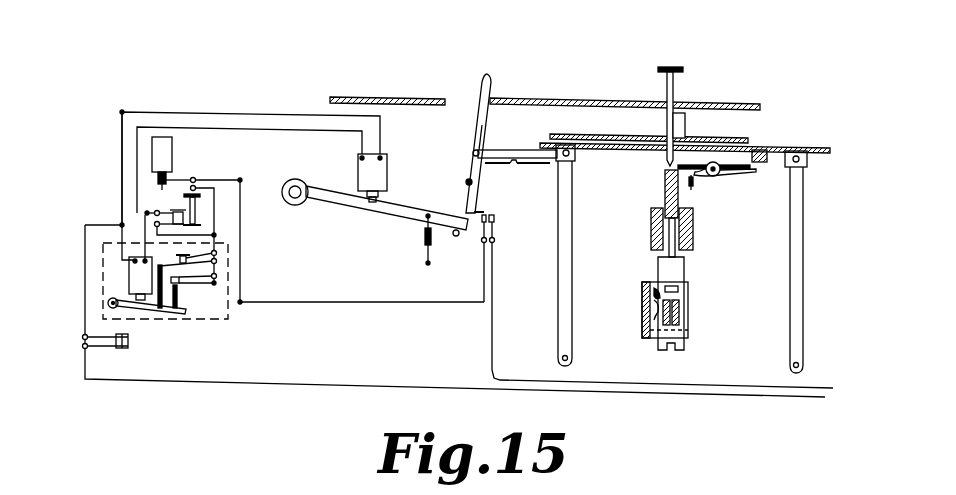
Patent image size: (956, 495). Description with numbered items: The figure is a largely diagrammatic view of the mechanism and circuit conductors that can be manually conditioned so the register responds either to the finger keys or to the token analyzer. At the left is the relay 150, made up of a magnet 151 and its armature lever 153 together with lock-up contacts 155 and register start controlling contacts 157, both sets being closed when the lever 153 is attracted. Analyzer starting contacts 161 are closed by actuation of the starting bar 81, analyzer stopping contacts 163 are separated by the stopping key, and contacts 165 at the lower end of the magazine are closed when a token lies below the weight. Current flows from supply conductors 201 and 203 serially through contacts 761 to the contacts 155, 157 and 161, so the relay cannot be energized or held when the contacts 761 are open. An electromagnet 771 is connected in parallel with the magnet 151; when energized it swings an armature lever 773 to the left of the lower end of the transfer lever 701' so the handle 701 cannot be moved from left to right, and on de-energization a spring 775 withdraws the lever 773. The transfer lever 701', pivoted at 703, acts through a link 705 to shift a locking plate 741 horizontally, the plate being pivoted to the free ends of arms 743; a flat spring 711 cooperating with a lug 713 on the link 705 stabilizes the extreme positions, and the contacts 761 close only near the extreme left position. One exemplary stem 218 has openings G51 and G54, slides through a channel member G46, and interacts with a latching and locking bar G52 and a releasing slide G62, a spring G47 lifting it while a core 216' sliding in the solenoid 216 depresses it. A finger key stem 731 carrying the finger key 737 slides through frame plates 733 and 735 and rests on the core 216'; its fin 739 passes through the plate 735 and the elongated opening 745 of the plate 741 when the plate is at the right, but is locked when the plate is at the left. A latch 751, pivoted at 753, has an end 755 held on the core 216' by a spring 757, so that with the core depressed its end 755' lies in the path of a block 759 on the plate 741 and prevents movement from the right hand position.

The starting bar 81 is at (173, 146).
The analyzer starting contacts 161 is at (156, 181).
The analyzer stopping contacts 163 is at (172, 214).
The relay 150 is at (191, 322).
The relay magnet 151 is at (140, 257).
The lock-up contacts 155 is at (192, 258).
The register start controlling contacts 157 is at (179, 285).
The armature lever 153 is at (170, 315).
The contacts 165 is at (128, 346).
The supply conductor 201 is at (346, 391).
The supply conductor 203 is at (695, 386).
The electromagnet 771 is at (372, 178).
The armature lever 773 is at (316, 207).
The spring 775 is at (426, 238).
The handle 701 is at (496, 139).
The transfer lever 701' is at (459, 136).
The pivot 703 is at (466, 183).
The link 705 is at (500, 150).
The flat spring 711 is at (492, 167).
The lug 713 is at (542, 167).
The contacts 761 is at (497, 217).
The frame plate 733 is at (748, 105).
The frame plate 735 is at (747, 139).
The locking plate 741 is at (818, 147).
The opening 745 is at (660, 150).
The finger key 737 is at (684, 70).
The finger key stem 731 is at (675, 94).
The fin 739 is at (687, 127).
The arms 743 is at (573, 272).
The end of latch 755 is at (698, 160).
The end of latch 755' is at (734, 160).
The latch 751 is at (718, 176).
The pivot 753 is at (712, 178).
The spring 757 is at (694, 186).
The block 759 is at (760, 163).
The core 216' is at (655, 194).
The solenoid 216 is at (695, 229).
The stem 218 is at (685, 269).
The channel member G46 is at (653, 291).
The spring G47 is at (652, 304).
The releasing slide G62 is at (648, 329).
The opening G54 is at (680, 290).
The opening G51 is at (680, 305).
The latching and locking bar G52 is at (680, 320).